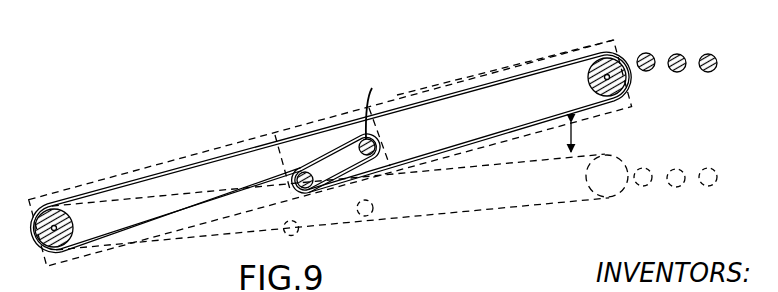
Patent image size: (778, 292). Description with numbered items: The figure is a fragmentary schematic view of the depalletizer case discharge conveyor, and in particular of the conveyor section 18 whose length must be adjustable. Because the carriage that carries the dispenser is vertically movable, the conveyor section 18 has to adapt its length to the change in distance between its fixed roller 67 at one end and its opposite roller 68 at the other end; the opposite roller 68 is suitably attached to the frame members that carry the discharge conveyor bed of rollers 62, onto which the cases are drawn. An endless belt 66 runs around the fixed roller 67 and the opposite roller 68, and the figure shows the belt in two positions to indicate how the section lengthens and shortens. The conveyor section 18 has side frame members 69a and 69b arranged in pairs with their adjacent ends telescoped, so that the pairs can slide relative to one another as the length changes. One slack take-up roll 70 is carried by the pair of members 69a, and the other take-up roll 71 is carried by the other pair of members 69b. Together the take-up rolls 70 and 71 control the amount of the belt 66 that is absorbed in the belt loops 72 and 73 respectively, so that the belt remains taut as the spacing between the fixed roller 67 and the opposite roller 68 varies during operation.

The conveyor section 18 is at (247, 124).
The bed of rollers 62 is at (703, 55).
The belt 66 is at (497, 82).
The fixed roller 67 is at (54, 216).
The opposite roller 68 is at (626, 85).
The side frame members 69a is at (397, 95).
The side frame members 69b is at (114, 178).
The slack take-up roll 70 is at (296, 191).
The take-up roll 71 is at (376, 141).
The belt loop 72 is at (292, 178).
The belt loop 73 is at (362, 103).